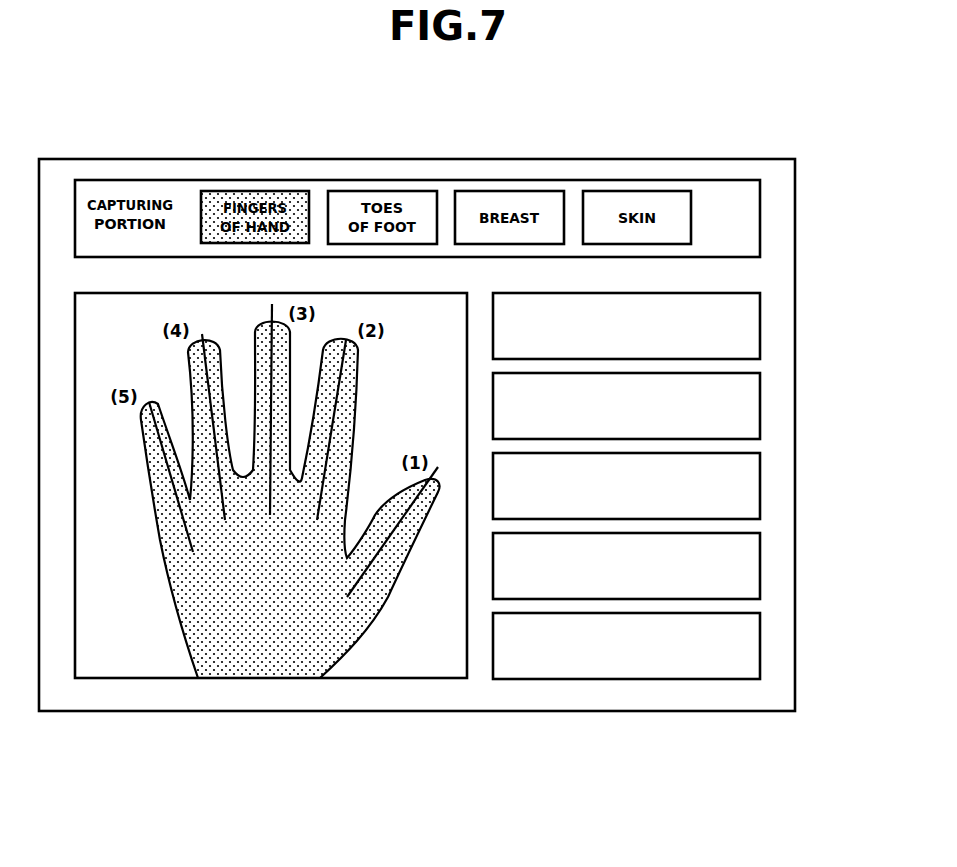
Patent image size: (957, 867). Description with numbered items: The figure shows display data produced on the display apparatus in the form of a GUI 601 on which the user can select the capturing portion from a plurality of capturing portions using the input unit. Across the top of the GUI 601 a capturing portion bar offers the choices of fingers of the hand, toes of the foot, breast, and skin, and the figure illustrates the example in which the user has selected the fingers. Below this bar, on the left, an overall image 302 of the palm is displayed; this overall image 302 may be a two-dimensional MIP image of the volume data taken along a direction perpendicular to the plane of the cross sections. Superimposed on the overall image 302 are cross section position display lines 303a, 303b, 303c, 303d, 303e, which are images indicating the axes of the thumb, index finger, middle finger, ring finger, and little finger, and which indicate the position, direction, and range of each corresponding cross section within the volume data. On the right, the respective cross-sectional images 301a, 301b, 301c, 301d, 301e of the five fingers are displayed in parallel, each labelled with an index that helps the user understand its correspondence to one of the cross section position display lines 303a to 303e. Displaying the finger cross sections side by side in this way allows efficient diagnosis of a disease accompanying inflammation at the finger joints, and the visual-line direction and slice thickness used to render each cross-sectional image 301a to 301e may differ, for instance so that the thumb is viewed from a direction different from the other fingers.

The GUI 601 is at (392, 159).
The overall image 302 is at (152, 678).
The cross section position display line 303a is at (363, 583).
The cross section position display line 303b is at (342, 393).
The cross section position display line 303c is at (262, 332).
The cross section position display line 303d is at (188, 371).
The cross section position display line 303e is at (183, 525).
The cross-sectional image 301a is at (760, 325).
The cross-sectional image 301b is at (760, 405).
The cross-sectional image 301c is at (760, 485).
The cross-sectional image 301d is at (760, 565).
The cross-sectional image 301e is at (760, 645).